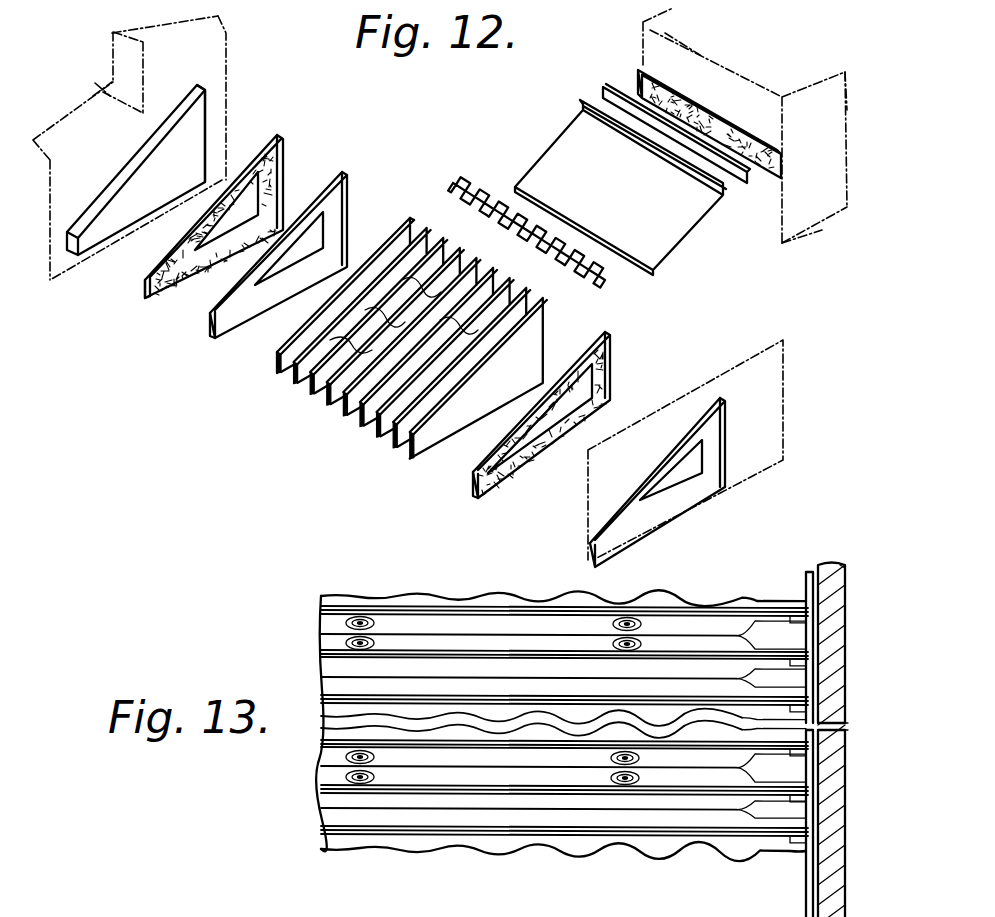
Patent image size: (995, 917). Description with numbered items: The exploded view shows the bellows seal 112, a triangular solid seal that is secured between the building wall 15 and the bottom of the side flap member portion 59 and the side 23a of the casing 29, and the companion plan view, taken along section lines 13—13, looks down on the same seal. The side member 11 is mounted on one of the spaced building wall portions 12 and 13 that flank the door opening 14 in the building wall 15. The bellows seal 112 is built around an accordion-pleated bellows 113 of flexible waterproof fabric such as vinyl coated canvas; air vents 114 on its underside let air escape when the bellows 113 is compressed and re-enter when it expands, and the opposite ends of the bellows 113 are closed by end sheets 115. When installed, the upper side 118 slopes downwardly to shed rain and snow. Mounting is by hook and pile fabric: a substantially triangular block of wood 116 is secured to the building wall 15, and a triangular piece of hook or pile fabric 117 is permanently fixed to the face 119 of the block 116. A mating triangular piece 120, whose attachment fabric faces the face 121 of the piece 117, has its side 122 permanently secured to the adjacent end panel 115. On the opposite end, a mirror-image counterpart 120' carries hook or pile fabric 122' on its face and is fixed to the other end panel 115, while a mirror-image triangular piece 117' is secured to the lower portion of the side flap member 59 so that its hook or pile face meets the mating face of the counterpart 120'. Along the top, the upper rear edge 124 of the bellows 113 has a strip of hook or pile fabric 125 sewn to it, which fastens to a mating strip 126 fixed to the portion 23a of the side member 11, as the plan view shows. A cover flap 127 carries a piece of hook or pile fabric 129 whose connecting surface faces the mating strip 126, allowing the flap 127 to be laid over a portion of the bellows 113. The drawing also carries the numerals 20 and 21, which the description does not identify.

In FIG. 12, the side member 11 is at (822, 230).
In FIG. 12, the building wall portion 12 is at (228, 30).
In FIG. 12, the building wall portion 13 is at (263, 326).
In FIG. 12, the door opening 14 is at (100, 90).
In FIG. 12, the building wall 15 is at (153, 28).
In FIG. 12, the wall 20 is at (848, 153).
In FIG. 13, the wall 20 is at (822, 562).
In FIG. 13, the gap in wall 21 is at (850, 726).
In FIG. 12, the side of casing 23a is at (698, 67).
In FIG. 13, the side of casing 23a is at (818, 568).
In FIG. 12, the casing 29 is at (847, 100).
In FIG. 12, the side flap member portion 59 is at (587, 497).
In FIG. 12, the bellows seal 112 is at (292, 431).
In FIG. 13, the bellows seal 112 is at (312, 789).
In FIG. 12, the accordion-pleated bellows 113 is at (347, 427).
In FIG. 13, the accordion-pleated bellows 113 is at (321, 728).
In FIG. 13, the air vents 114 is at (346, 643).
In FIG. 12, the end sheets 115 is at (403, 213).
In FIG. 12, the triangular block of wood 116 is at (123, 170).
In FIG. 12, the triangular piece of hook or pile fabric 117 is at (246, 211).
In FIG. 12, the triangular piece of hook or pile fabric 117' is at (719, 482).
In FIG. 12, the upper side 118 is at (390, 327).
In FIG. 12, the face of block 119 is at (198, 115).
In FIG. 12, the mating piece of hook or pile fabric 120 is at (307, 247).
In FIG. 12, the mirror image counterpart of triangular member 120' is at (578, 415).
In FIG. 12, the face of member 117 121 is at (173, 287).
In FIG. 12, the side of member 120 122 is at (206, 347).
In FIG. 12, the hook or pile fabric 122' is at (526, 483).
In FIG. 12, the upper edge of bellows 124 is at (410, 213).
In FIG. 12, the strip of hook or pile fabric 125 is at (607, 283).
In FIG. 13, the strip of hook or pile fabric 125 is at (806, 852).
In FIG. 12, the mating strip of hook or pile fabric 126 is at (780, 170).
In FIG. 13, the mating strip of hook or pile fabric 126 is at (818, 582).
In FIG. 12, the cover flap 127 is at (567, 143).
In FIG. 12, the piece of hook or pile fabric 129 is at (733, 190).